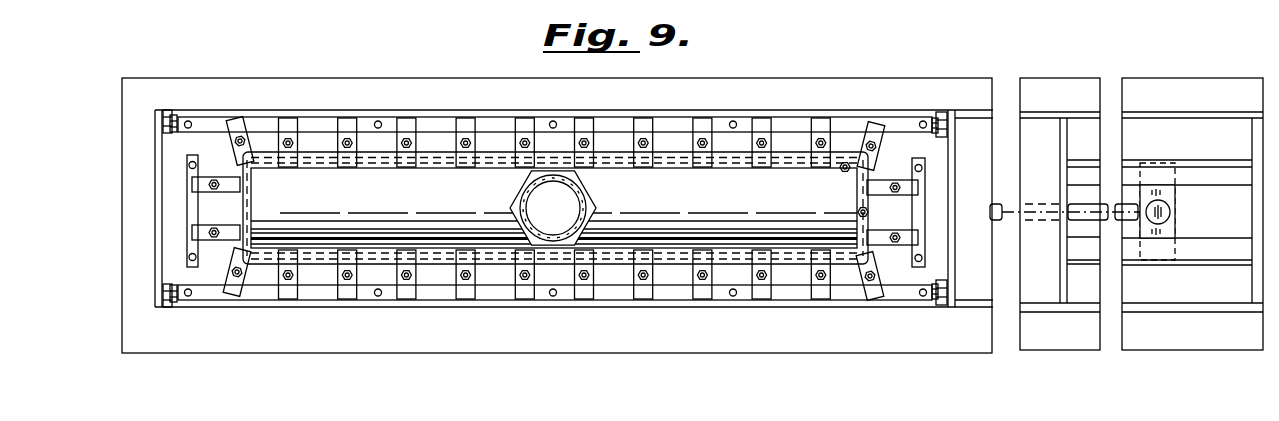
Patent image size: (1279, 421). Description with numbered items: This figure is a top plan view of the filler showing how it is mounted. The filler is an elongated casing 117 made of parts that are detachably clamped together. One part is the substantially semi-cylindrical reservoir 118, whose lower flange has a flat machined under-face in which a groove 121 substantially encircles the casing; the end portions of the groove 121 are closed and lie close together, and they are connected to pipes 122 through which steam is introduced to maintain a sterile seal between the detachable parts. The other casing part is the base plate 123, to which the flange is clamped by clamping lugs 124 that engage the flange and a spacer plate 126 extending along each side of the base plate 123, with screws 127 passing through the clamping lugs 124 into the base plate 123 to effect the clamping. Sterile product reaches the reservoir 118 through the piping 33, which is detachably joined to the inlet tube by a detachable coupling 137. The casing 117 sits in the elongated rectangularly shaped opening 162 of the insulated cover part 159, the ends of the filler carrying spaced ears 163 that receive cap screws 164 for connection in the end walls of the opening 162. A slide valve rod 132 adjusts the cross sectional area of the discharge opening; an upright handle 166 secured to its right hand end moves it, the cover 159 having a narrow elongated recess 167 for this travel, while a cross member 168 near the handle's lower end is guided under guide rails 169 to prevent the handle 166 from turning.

The piping 33 is at (527, 195).
The elongated casing 117 is at (421, 201).
The semi-cylindrical reservoir 118 is at (664, 156).
The groove 121 is at (438, 148).
The pipes 122 is at (858, 210).
The base plate 123 is at (487, 142).
The clamping lugs 124 is at (244, 120).
The spacer plate 126 is at (322, 118).
The screws 127 is at (290, 273).
The slide valve rod 132 is at (998, 221).
The detachable coupling 137 is at (588, 197).
The insulated cover part 159 is at (137, 252).
The elongated rectangularly shaped opening 162 is at (614, 113).
The spaced ears 163 is at (168, 109).
The cap screws 164 is at (176, 114).
The upright handle 166 is at (1170, 208).
The elongated recess 167 is at (1090, 230).
The cross member 168 is at (1162, 232).
The guide rails 169 is at (1217, 177).